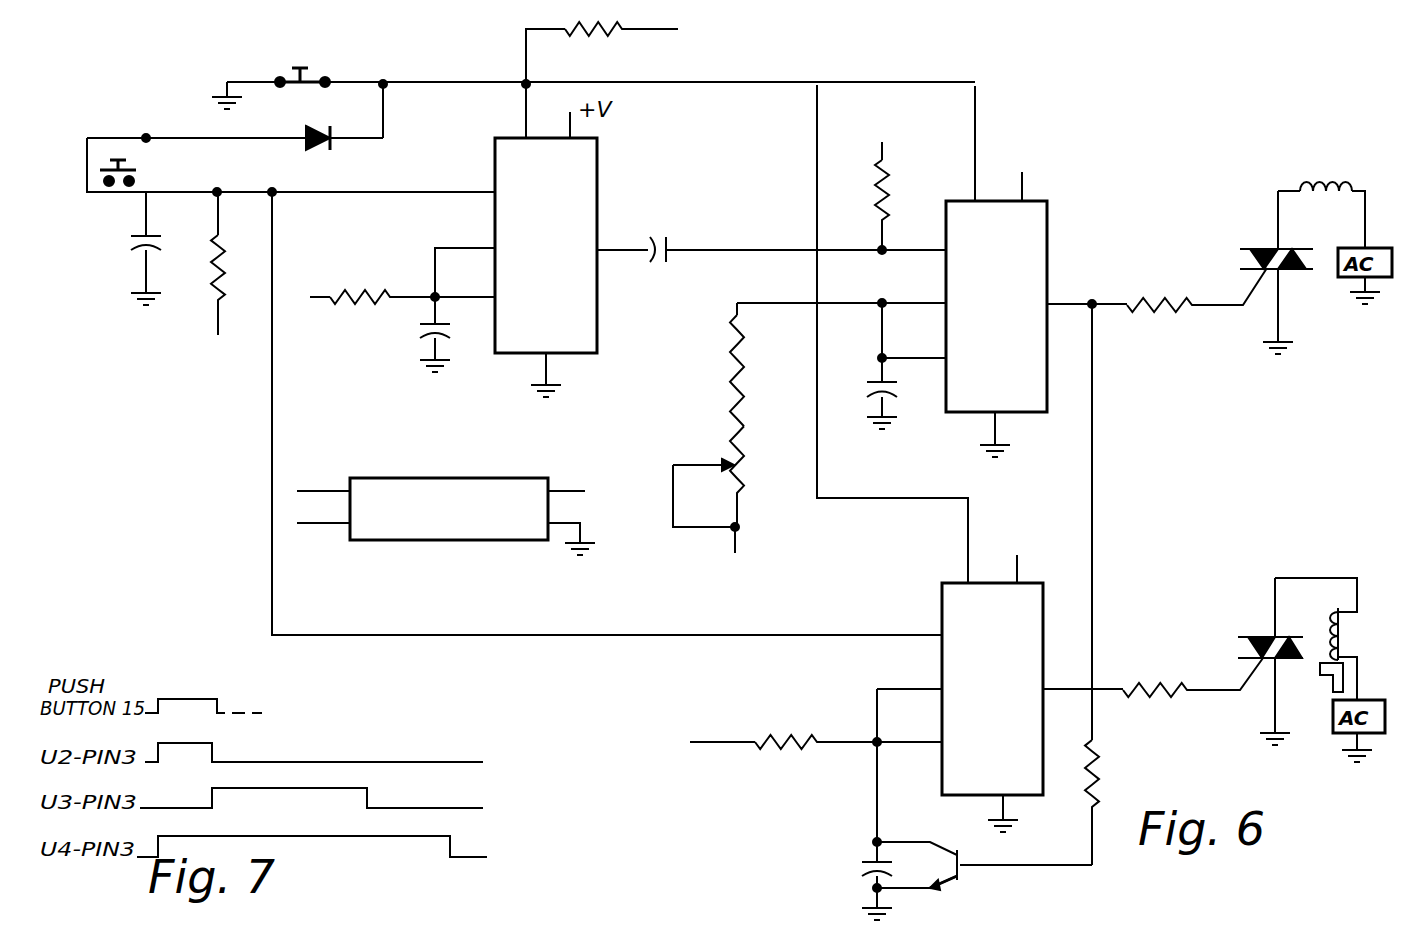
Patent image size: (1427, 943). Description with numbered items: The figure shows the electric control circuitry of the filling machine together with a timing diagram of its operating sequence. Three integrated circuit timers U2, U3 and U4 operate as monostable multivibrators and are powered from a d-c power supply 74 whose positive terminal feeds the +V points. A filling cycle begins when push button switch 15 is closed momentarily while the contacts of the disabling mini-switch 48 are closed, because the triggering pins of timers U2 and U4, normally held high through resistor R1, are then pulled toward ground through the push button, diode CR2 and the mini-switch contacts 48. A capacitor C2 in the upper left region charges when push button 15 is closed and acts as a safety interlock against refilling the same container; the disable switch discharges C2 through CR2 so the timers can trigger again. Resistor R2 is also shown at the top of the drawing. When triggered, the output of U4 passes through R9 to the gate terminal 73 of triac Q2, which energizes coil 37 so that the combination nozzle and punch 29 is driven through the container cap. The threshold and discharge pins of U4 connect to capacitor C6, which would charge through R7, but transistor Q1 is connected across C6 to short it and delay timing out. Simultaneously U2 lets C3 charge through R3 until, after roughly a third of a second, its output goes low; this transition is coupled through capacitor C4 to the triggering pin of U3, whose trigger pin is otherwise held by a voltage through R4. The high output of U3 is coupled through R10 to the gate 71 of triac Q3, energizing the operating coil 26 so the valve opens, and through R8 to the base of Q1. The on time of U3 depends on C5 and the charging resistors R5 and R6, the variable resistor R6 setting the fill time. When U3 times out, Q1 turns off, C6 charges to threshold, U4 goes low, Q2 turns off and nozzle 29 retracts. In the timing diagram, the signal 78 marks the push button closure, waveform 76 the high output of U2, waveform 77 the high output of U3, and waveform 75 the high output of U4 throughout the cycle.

In FIG. 6, the disabling mini-switch 48 is at (318, 76).
In FIG. 6, the diode CR2 is at (318, 150).
In FIG. 6, the push button switch 15 is at (118, 185).
In FIG. 6, the capacitor C2 is at (137, 240).
In FIG. 6, the resistor R1 is at (206, 275).
In FIG. 6, the resistor R2 is at (618, 35).
In FIG. 6, the resistor R3 is at (380, 278).
In FIG. 6, the capacitor C3 is at (426, 330).
In FIG. 6, the integrated circuit timer U2 is at (568, 297).
In FIG. 6, the capacitor C4 is at (666, 237).
In FIG. 6, the resistor R4 is at (893, 172).
In FIG. 6, the charging resistor R5 is at (742, 345).
In FIG. 6, the variable resistor R6 is at (730, 433).
In FIG. 6, the capacitor C5 is at (868, 386).
In FIG. 6, the integrated circuit timer U3 is at (1005, 258).
In FIG. 6, the resistor R10 is at (1182, 310).
In FIG. 6, the triac Q3 is at (1258, 240).
In FIG. 6, the control gate 71 is at (1250, 281).
In FIG. 6, the operating coil 26 is at (1328, 182).
In FIG. 6, the d-c power supply 74 is at (525, 486).
In FIG. 6, the integrated circuit timer U4 is at (942, 768).
In FIG. 6, the resistor R7 is at (782, 752).
In FIG. 6, the capacitor C6 is at (862, 864).
In FIG. 6, the transistor Q1 is at (950, 890).
In FIG. 6, the resistor R8 is at (1100, 785).
In FIG. 6, the resistor R9 is at (1165, 680).
In FIG. 6, the triac Q2 is at (1253, 630).
In FIG. 6, the gate terminal 73 is at (1250, 690).
In FIG. 6, the coil 37 is at (1352, 650).
In FIG. 6, the combination nozzle and punch 29 is at (1330, 685).
In FIG. 7, the high going signal 78 is at (200, 695).
In FIG. 7, the timing waveform 76 is at (338, 760).
In FIG. 7, the waveform 77 is at (330, 790).
In FIG. 7, the waveform 75 is at (374, 840).